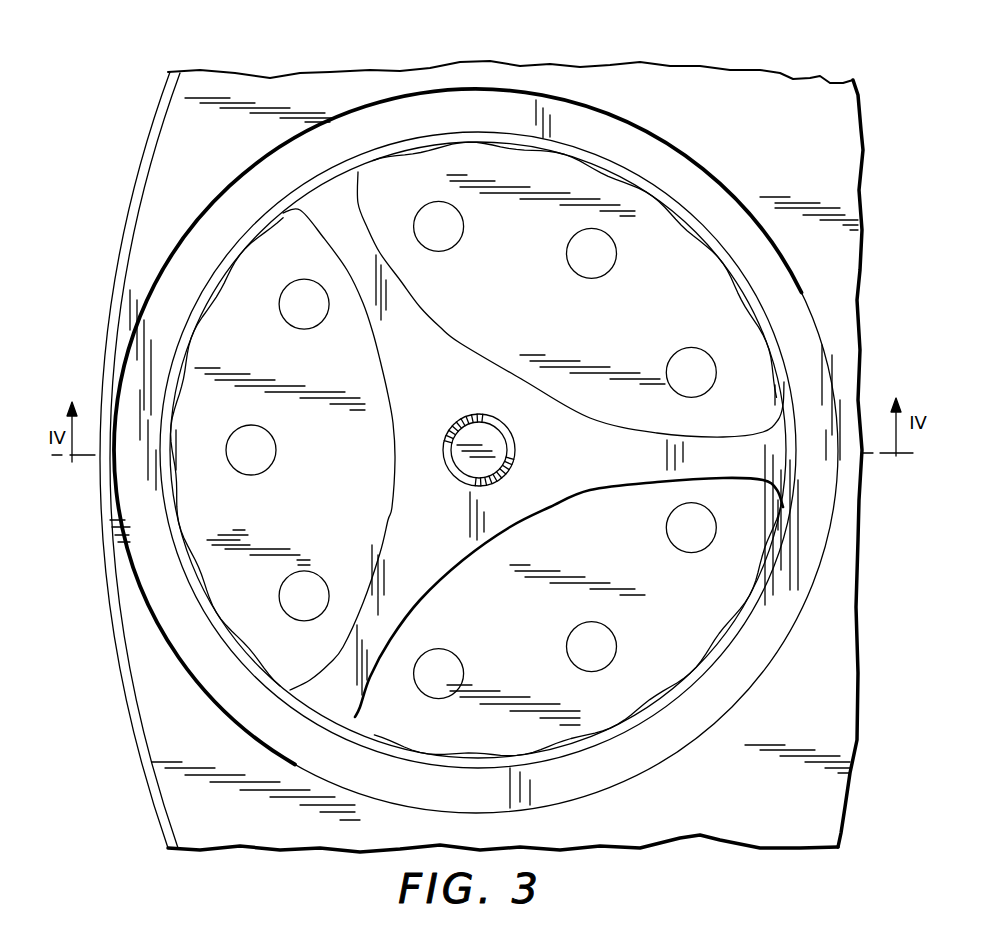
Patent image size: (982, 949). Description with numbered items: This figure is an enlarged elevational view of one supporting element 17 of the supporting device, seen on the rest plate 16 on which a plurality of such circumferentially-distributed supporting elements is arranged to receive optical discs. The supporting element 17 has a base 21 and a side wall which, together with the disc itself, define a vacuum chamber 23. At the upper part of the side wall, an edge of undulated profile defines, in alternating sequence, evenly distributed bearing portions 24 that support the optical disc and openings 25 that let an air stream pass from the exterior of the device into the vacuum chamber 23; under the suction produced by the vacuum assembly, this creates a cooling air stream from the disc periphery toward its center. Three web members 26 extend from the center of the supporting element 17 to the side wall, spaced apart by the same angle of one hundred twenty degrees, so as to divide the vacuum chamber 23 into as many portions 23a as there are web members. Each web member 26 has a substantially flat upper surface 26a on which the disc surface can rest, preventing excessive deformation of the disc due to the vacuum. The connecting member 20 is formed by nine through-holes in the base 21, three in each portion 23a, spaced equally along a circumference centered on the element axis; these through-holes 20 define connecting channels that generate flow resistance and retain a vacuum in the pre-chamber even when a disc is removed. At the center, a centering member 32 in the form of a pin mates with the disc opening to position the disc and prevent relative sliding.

The rest plate 16 is at (162, 183).
The supporting element 17 is at (350, 113).
The connecting member 20 is at (563, 250).
The base 21 is at (602, 344).
The vacuum chamber 23 is at (303, 677).
The portion of the vacuum chamber 23a is at (757, 503).
The bearing portion 24 is at (650, 190).
The opening 25 is at (597, 157).
The web member 26 is at (370, 317).
The flat upper surface 26a is at (428, 313).
The centering member 32 is at (446, 458).